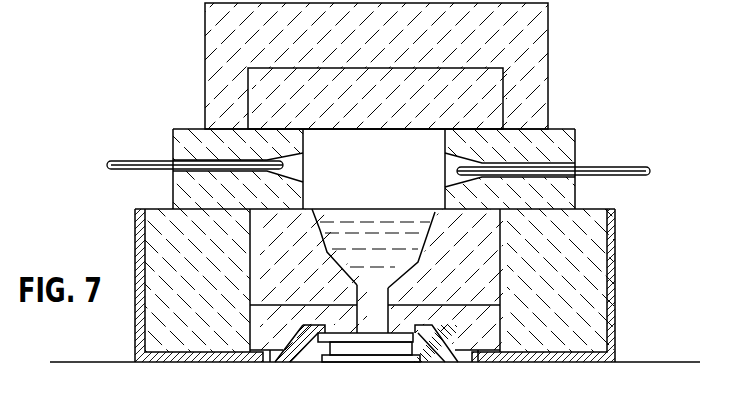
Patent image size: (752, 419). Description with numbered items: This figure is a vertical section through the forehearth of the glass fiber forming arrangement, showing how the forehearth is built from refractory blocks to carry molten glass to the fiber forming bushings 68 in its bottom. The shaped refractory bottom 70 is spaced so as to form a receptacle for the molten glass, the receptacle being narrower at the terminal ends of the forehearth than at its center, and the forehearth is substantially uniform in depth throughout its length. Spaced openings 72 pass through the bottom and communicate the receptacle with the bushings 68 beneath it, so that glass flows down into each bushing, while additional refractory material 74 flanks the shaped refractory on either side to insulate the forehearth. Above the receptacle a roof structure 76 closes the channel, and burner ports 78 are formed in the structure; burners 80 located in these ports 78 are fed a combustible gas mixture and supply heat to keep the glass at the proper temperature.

The fiber forming bushing 68 is at (373, 350).
The bottom 70 is at (306, 218).
The spaced opening 72 is at (362, 297).
The lower mold body / outer housing 74 is at (155, 250).
The roof structure 76 is at (258, 90).
The burner port 78 is at (198, 158).
The burner 80 is at (107, 162).